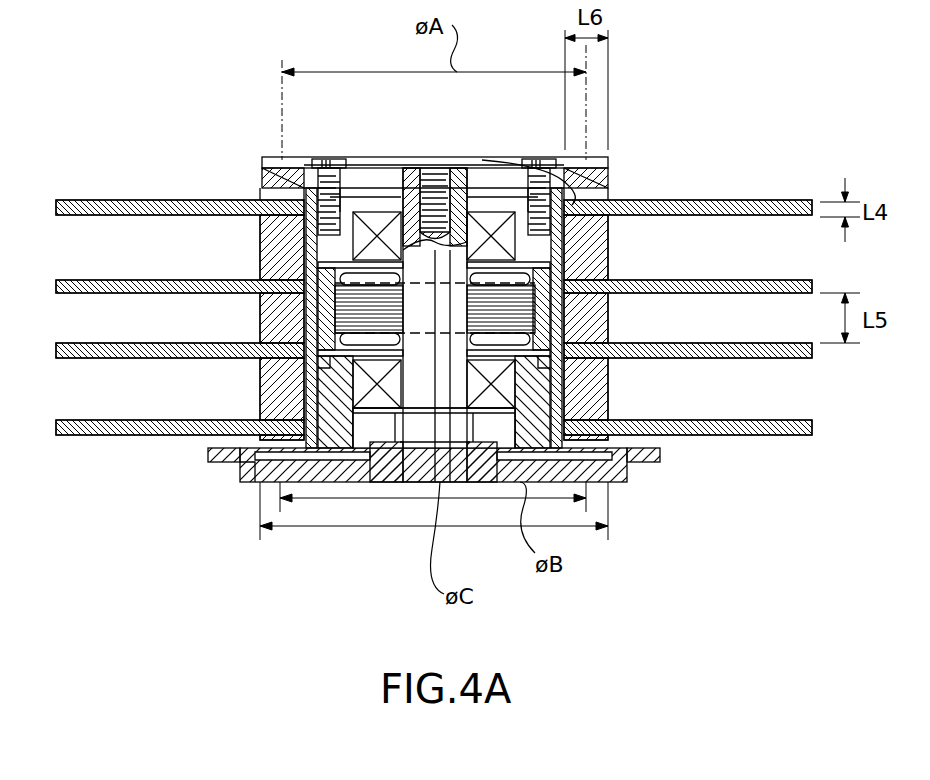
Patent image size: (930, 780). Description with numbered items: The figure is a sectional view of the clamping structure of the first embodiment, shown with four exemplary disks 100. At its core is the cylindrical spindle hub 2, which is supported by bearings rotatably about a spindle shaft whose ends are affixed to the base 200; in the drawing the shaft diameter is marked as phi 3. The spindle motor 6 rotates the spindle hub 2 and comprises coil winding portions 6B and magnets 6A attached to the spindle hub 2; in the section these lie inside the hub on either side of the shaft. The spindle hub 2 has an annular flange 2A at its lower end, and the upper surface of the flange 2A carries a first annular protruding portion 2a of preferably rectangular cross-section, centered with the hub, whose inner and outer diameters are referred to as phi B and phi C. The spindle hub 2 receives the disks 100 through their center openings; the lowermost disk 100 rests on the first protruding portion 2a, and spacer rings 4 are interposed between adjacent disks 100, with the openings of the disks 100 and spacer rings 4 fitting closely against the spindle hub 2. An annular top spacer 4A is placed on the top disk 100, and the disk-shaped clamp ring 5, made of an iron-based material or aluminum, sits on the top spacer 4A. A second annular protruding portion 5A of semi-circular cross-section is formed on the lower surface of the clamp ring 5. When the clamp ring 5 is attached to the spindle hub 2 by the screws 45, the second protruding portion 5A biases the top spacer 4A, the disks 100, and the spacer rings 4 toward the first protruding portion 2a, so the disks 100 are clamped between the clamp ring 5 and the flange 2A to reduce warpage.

The spindle hub 2 is at (606, 400).
The annular flange 2A is at (320, 482).
The first annular protruding portion 2a is at (245, 472).
The shaft diameter 3 is at (608, 160).
The spacer ring 4 is at (608, 252).
The top spacer 4A is at (608, 190).
The clamp ring 5 is at (268, 158).
The second annular protruding portion 5A is at (260, 182).
The spindle motor 6 is at (483, 158).
The magnets 6A is at (318, 310).
The coil winding portions 6B is at (572, 310).
The screws 45 is at (322, 158).
The disks 100 is at (119, 200).
The base 200 is at (627, 471).